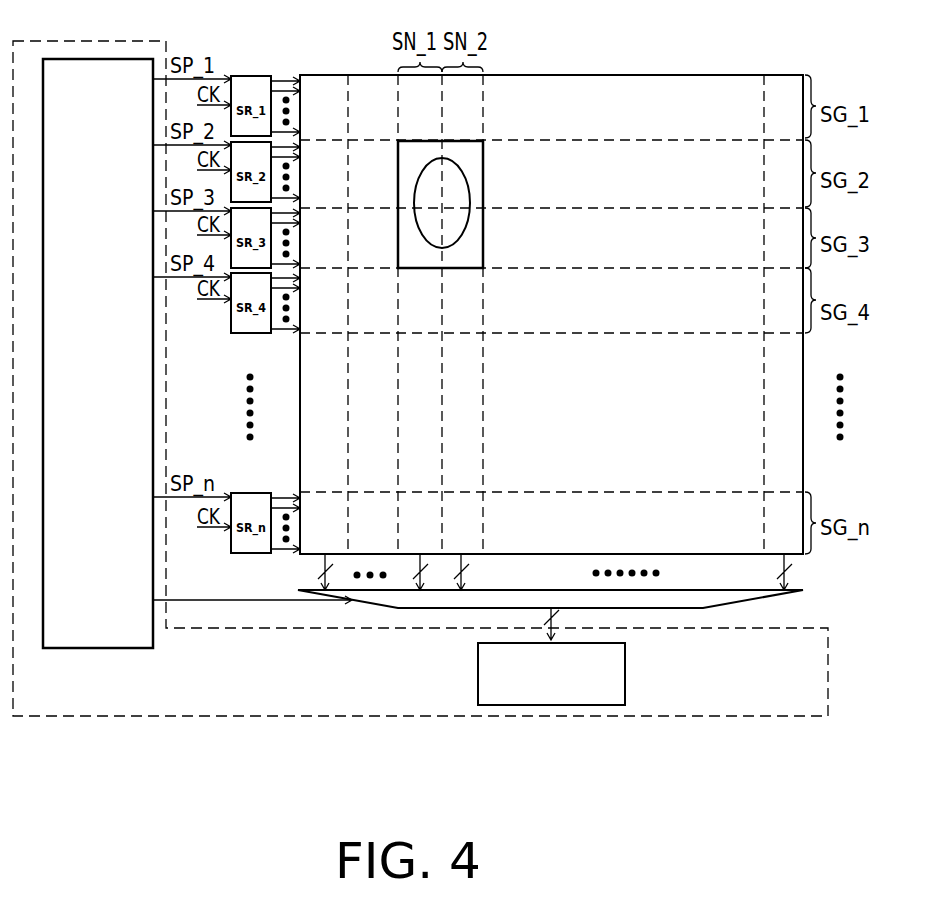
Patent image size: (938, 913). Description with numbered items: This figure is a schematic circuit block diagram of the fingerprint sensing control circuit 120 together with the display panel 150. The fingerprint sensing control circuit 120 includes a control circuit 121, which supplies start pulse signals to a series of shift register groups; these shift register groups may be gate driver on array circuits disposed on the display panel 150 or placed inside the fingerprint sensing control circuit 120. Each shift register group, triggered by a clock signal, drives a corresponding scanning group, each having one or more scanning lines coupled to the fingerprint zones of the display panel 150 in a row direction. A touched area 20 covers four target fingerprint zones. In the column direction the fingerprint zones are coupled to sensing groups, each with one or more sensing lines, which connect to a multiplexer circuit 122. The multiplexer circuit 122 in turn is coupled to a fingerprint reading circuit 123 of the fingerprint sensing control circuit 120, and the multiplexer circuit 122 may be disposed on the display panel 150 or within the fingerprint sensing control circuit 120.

The touched area 20 is at (472, 203).
The fingerprint sensing control circuit 120 is at (263, 716).
The control circuit 121 is at (97, 648).
The multiplexer circuit 122 is at (373, 608).
The fingerprint reading circuit 123 is at (625, 673).
The display panel 150 is at (724, 74).